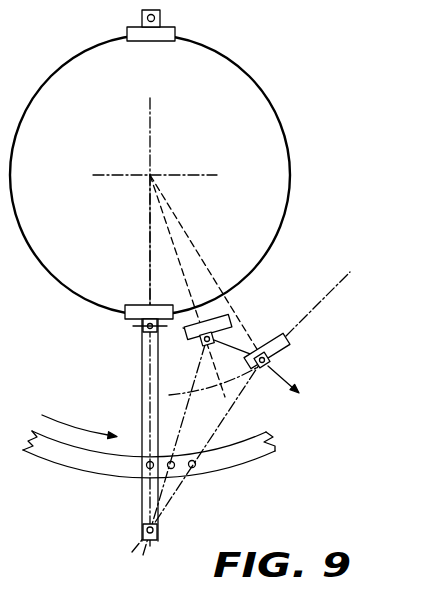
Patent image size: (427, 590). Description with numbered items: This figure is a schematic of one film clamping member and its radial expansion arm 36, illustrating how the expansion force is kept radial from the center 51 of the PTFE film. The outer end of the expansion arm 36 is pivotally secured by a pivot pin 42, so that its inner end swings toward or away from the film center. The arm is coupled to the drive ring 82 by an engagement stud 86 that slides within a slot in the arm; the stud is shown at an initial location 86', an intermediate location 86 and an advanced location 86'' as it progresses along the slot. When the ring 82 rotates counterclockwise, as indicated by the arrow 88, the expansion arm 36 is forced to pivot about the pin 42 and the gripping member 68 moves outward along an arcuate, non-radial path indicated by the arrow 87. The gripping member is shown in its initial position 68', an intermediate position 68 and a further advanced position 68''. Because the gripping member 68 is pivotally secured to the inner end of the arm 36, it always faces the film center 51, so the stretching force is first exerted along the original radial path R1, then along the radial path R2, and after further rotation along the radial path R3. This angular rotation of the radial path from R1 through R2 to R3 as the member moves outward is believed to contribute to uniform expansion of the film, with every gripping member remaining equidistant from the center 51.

The center of the film 51 is at (152, 177).
The original radial path R1 is at (147, 242).
The second radial path R2 is at (178, 244).
The third radial path R3 is at (170, 212).
The gripping member in initial position 68' is at (130, 301).
The gripping member 68 is at (227, 317).
The gripping member in advanced position 68'' is at (276, 337).
The arrow indicating arcuate path 87 is at (282, 378).
The expansion arm 36 is at (141, 400).
The pivot pin 42 is at (158, 531).
The ring 82 is at (257, 448).
The engagement stud in initial position 86' is at (120, 489).
The engagement stud 86 is at (190, 489).
The engagement stud in advanced position 86'' is at (222, 481).
The arrow indicating ring rotation 88 is at (68, 423).